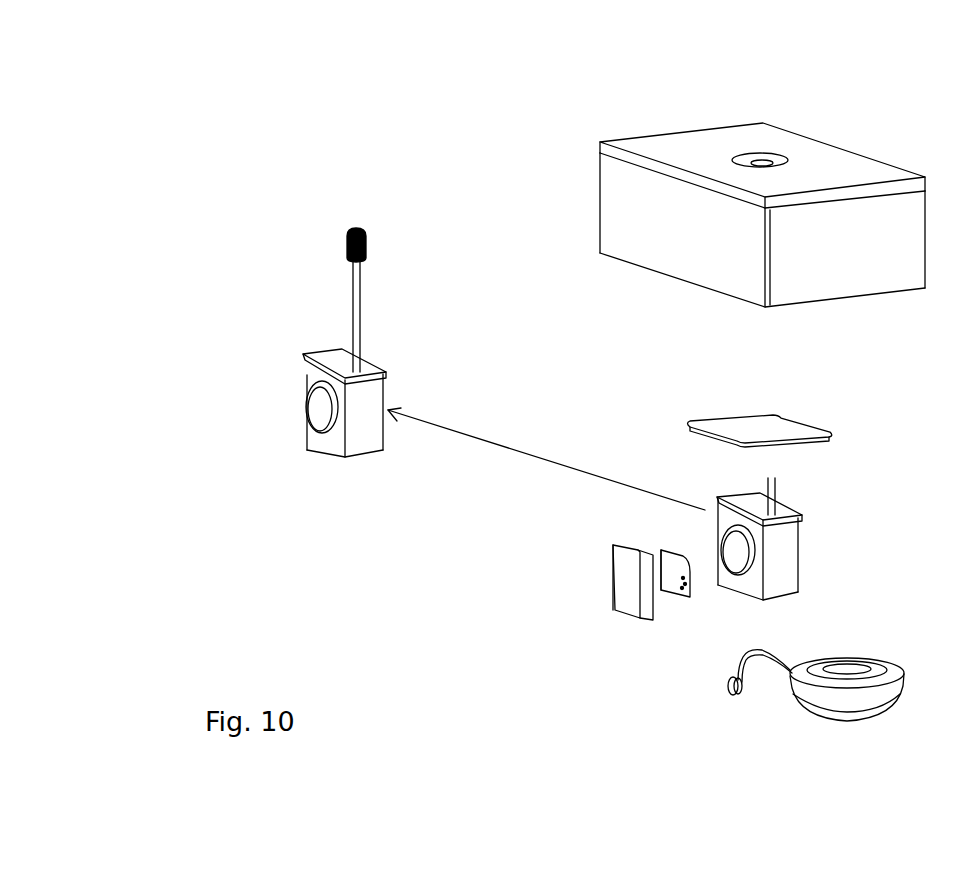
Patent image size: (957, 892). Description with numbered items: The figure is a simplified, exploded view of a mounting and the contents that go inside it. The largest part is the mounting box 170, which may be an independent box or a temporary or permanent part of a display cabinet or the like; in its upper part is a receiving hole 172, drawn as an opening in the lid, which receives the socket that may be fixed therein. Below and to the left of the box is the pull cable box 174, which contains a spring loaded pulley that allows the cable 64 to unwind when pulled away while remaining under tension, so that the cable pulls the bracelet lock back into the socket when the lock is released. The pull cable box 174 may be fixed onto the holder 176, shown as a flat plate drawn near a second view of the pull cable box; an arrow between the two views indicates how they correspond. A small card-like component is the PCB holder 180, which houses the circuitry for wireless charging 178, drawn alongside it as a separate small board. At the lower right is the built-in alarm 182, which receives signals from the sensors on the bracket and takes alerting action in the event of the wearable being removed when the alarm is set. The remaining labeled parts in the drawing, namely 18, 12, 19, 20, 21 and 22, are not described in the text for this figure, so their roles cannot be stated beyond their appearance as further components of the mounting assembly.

The housing 18 is at (603, 208).
The mounting box 170 is at (603, 141).
The receiving hole 172 is at (760, 160).
The cable 64 is at (353, 300).
The pull cable box 174 is at (307, 377).
The sensor module 12 is at (307, 413).
The holder 176 is at (750, 430).
The card 19 is at (730, 438).
The PCB holder 180 is at (615, 563).
The battery pack 20 is at (613, 612).
The circuitry for wireless charging 178 is at (672, 595).
The board 21 is at (683, 597).
The built-in alarm 182 is at (833, 705).
The cap 22 is at (837, 703).